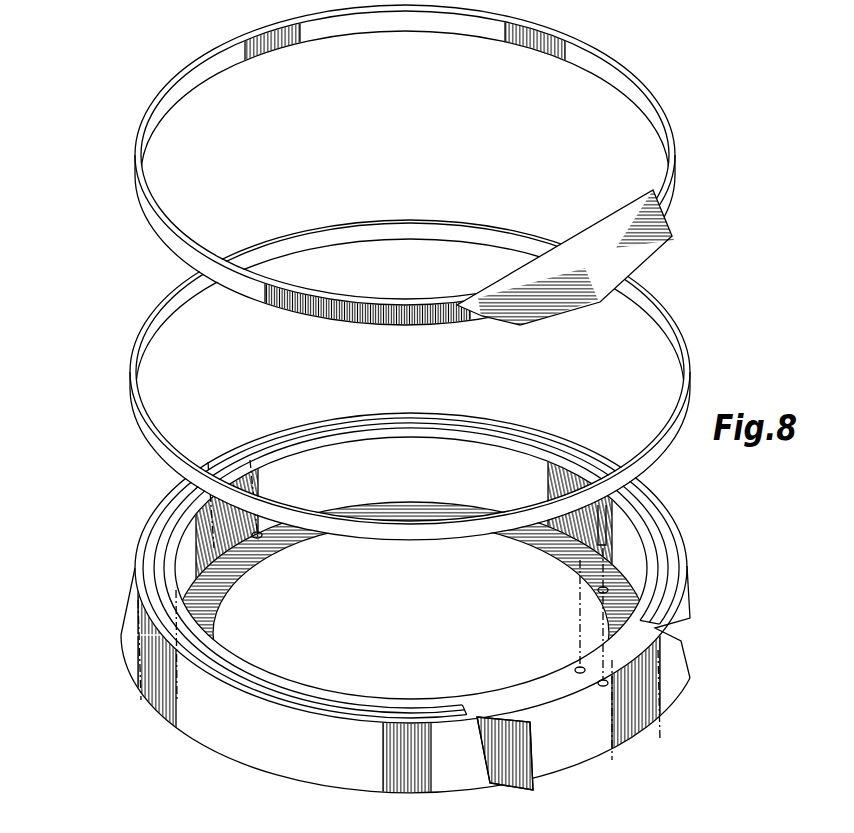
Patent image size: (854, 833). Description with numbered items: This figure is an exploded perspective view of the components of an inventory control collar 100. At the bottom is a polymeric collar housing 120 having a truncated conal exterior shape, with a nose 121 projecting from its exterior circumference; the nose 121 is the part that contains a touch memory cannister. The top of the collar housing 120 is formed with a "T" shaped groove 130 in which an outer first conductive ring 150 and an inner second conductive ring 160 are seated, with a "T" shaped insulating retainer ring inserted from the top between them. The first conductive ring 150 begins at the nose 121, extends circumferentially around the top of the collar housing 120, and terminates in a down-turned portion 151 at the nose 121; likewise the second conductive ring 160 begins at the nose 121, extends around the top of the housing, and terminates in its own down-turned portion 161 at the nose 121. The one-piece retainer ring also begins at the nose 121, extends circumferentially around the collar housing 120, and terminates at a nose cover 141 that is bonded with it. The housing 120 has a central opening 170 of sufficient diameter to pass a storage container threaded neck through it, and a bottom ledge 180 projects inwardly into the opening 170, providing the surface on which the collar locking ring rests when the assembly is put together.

The inventory control collar 100 is at (699, 623).
The collar housing 120 is at (413, 606).
The nose 121 is at (670, 690).
The "T" shaped groove 130 is at (645, 489).
The nose cover 141 is at (673, 236).
The first conductive ring 150 is at (427, 416).
The down-turned portion 151 is at (612, 541).
The second conductive ring 160 is at (655, 372).
The down-turned portion 161 is at (517, 536).
The central opening 170 is at (285, 653).
The bottom ledge 180 is at (265, 565).